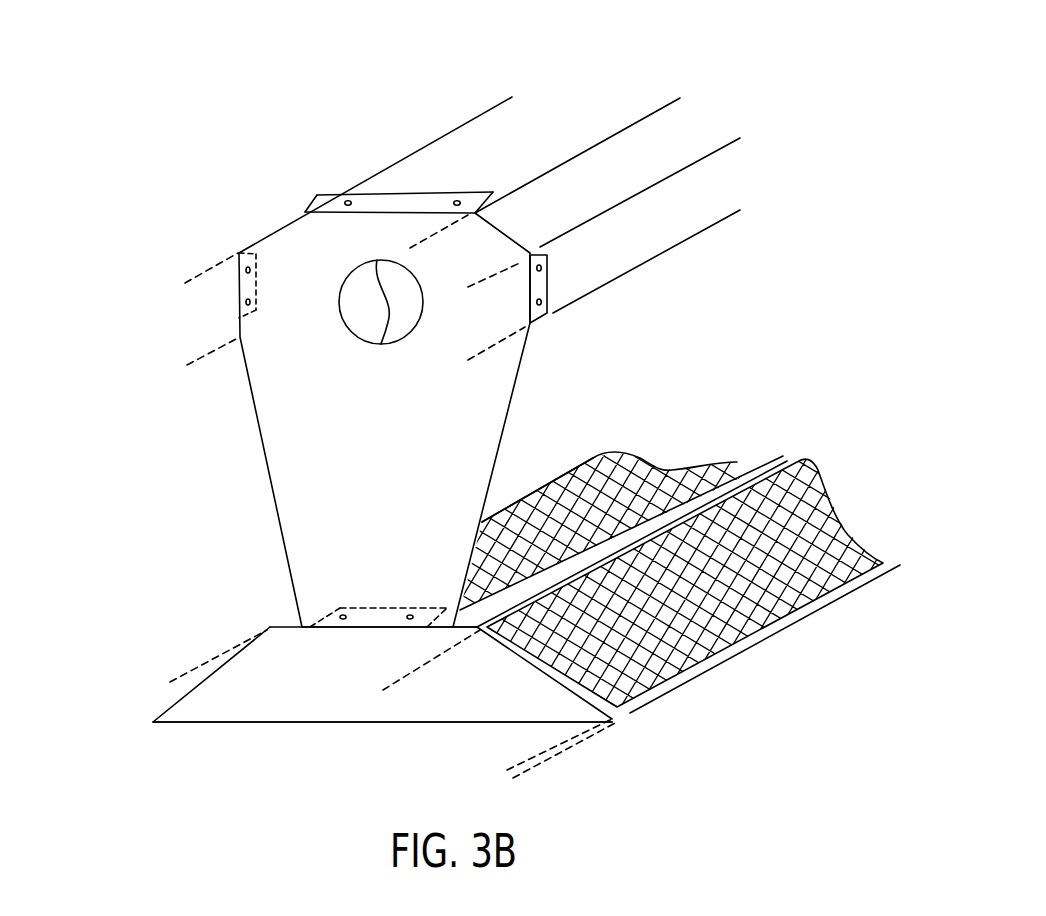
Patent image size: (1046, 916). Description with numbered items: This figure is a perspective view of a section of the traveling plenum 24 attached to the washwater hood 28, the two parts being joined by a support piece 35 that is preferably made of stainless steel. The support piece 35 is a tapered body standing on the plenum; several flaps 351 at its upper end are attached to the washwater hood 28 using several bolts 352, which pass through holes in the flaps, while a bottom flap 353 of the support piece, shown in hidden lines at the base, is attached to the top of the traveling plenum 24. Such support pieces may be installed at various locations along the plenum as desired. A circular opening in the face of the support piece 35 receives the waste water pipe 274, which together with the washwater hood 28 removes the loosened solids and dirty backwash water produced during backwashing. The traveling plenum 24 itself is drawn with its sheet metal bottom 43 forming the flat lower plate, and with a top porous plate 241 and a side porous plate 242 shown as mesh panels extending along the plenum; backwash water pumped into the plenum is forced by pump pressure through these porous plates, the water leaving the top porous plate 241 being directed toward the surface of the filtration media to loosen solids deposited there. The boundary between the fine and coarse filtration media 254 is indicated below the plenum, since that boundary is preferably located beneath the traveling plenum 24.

The traveling plenum 24 is at (232, 677).
The washwater hood 28 is at (523, 128).
The support piece 35 is at (282, 447).
The sheet metal bottom 43 is at (317, 722).
The top porous plate 241 is at (678, 468).
The side porous plate 242 is at (827, 533).
The boundary between fine and coarse filtration media 254 is at (317, 613).
The waste water pipe 274 is at (372, 322).
The flap 351 is at (395, 198).
The bolt 352 is at (460, 202).
The bottom flap 353 is at (340, 608).